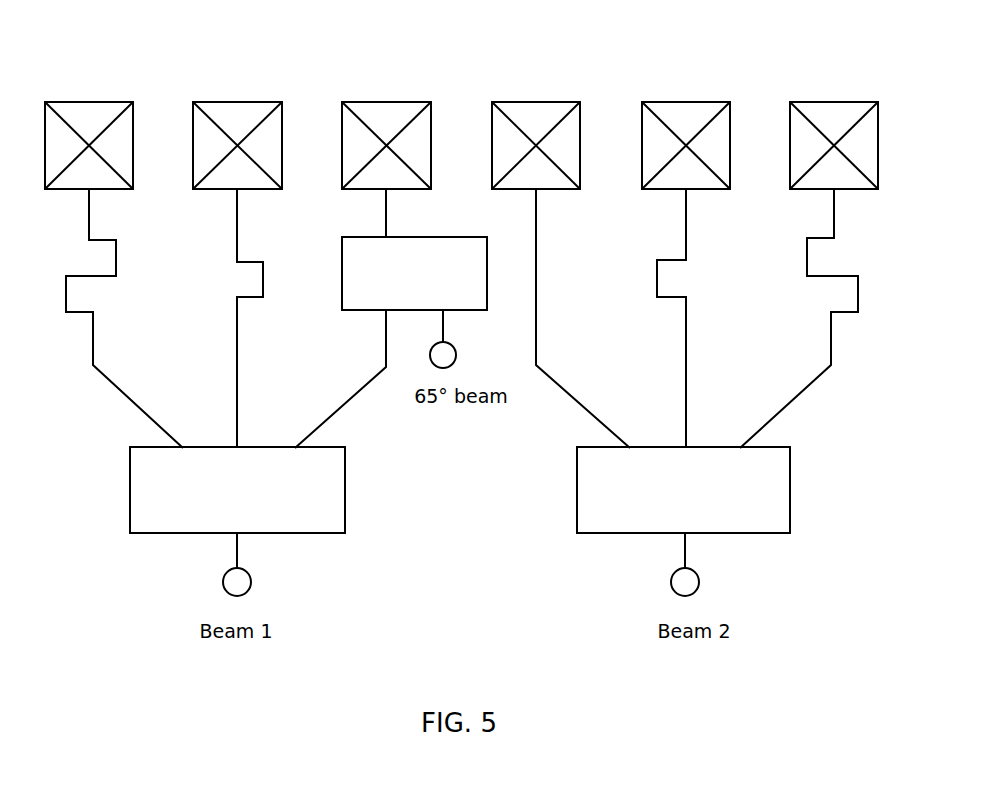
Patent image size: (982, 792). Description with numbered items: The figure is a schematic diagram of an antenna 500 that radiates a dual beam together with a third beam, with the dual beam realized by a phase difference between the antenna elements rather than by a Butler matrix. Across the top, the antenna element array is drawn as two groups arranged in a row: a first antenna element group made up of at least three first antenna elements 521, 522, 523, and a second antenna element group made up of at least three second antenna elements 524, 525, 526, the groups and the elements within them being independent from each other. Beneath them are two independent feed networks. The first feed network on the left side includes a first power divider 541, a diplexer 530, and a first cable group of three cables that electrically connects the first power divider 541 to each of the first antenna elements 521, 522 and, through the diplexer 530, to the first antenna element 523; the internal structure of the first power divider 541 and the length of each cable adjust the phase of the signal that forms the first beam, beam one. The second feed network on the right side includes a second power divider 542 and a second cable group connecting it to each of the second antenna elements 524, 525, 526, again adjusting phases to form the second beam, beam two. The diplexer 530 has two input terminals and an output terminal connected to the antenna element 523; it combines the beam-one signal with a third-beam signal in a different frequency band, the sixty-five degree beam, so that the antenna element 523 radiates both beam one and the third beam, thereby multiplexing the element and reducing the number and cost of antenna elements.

The antenna 500 is at (636, 81).
The first antenna element 521 is at (73, 125).
The first antenna element 522 is at (222, 125).
The first antenna element 523 is at (371, 125).
The second antenna element 524 is at (521, 125).
The second antenna element 525 is at (671, 125).
The second antenna element 526 is at (819, 125).
The diplexer 530 is at (398, 282).
The first power divider 541 is at (317, 520).
The second power divider 542 is at (750, 503).